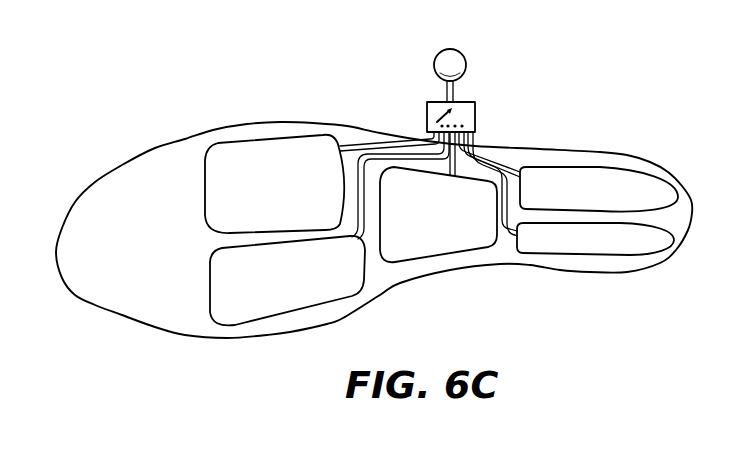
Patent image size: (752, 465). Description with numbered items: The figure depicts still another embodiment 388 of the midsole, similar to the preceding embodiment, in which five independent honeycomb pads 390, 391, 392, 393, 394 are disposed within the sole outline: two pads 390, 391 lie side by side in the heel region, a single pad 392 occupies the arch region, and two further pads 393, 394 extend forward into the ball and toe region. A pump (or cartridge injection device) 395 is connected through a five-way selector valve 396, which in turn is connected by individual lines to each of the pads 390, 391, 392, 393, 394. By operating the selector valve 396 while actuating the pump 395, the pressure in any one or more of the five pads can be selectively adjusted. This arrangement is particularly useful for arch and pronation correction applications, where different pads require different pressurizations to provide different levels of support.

The embodiment 388 is at (168, 367).
The honeycomb pad 390 is at (293, 195).
The honeycomb pad 391 is at (298, 286).
The honeycomb pad 392 is at (456, 226).
The honeycomb pad 393 is at (617, 201).
The honeycomb pad 394 is at (617, 251).
The pump 395 is at (467, 63).
The 5-way selector valve 396 is at (477, 120).